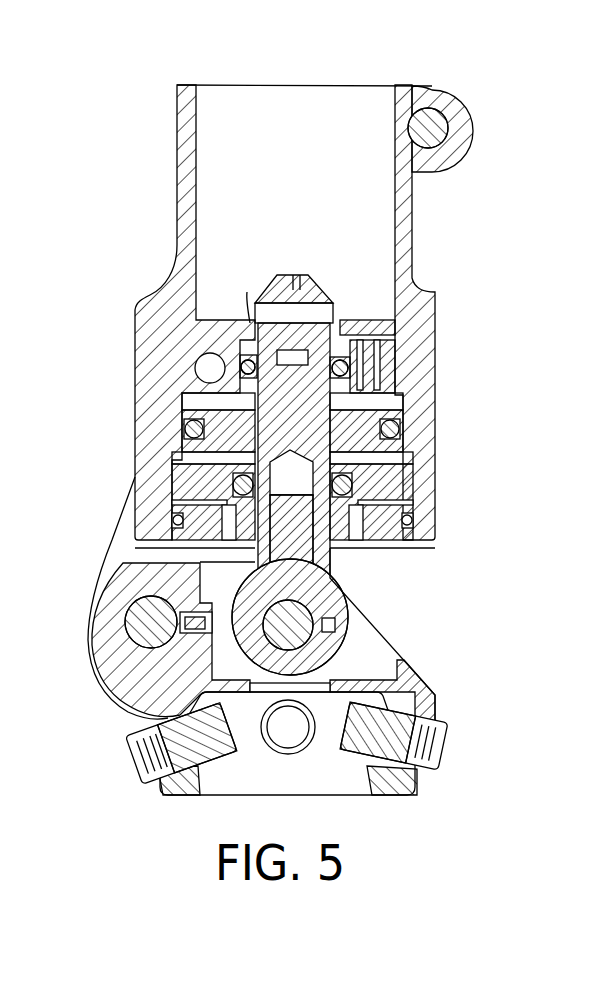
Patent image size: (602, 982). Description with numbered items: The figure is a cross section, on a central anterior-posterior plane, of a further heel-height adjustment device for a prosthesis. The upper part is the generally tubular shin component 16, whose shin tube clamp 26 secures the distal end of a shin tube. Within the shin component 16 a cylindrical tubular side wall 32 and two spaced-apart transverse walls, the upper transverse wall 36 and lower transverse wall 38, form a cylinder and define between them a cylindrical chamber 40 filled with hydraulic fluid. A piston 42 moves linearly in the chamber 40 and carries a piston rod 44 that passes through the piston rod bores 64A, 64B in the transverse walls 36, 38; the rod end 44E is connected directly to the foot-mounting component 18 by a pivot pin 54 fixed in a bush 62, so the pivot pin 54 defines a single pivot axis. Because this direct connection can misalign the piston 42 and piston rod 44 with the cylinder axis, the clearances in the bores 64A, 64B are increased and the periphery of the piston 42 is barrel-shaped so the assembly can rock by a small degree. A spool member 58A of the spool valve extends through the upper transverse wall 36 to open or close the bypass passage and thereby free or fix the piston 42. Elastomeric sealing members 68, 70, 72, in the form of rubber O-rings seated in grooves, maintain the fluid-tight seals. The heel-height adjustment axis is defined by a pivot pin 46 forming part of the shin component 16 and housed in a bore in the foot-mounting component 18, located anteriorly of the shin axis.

The shin component 16 is at (326, 402).
The foot-mounting component 18 is at (422, 695).
The shin tube clamp 26 is at (448, 102).
The tubular side wall 32 is at (148, 423).
The upper transverse wall 36 is at (392, 370).
The lower transverse wall 38 is at (187, 478).
The cylindrical chamber 40 is at (387, 458).
The piston 42 is at (183, 397).
The piston rod 44 is at (284, 356).
The piston rod end 44E is at (292, 560).
The pivot pin 46 is at (143, 637).
The pivot pin 54 is at (335, 602).
The spool member 58A is at (205, 370).
The bush 62 is at (320, 650).
The piston rod bore 64A is at (378, 388).
The piston rod bore 64B is at (257, 500).
The elastomeric sealing member 68 is at (397, 432).
The elastomeric sealing member 70 is at (232, 362).
The elastomeric sealing member 72 is at (405, 492).